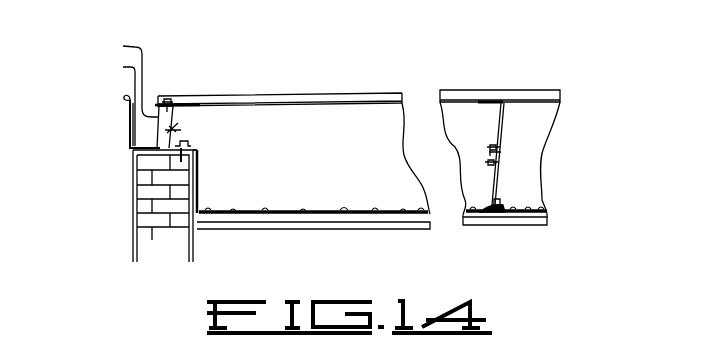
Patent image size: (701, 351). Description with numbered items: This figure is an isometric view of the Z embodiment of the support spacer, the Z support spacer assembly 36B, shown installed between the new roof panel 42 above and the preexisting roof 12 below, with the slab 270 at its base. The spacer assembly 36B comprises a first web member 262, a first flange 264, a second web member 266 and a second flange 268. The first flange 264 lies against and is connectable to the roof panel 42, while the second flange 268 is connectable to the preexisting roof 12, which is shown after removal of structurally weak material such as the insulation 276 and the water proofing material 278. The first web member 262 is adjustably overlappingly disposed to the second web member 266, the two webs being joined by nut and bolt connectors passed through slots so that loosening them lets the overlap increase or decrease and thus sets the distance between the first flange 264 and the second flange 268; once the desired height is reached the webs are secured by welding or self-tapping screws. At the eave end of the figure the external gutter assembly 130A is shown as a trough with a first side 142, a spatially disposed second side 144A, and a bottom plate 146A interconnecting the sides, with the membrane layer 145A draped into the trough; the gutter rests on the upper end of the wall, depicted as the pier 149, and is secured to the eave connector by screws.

The preexisting roof 12 is at (268, 211).
The roof panel 42 is at (313, 92).
The Z support spacer assembly 36B is at (182, 126).
The external gutter assembly 130A is at (124, 144).
The first side 142 is at (171, 104).
The second side 144A is at (125, 116).
The membrane layer 145A is at (116, 76).
The bottom plate 146A is at (105, 101).
The pier 149 is at (131, 178).
The first web member 262 is at (180, 108).
The first flange 264 is at (152, 116).
The second web member 266 is at (189, 143).
The second flange 268 is at (197, 145).
The slab 270 is at (300, 225).
The insulation 276 is at (497, 148).
The bolt 278 is at (495, 164).